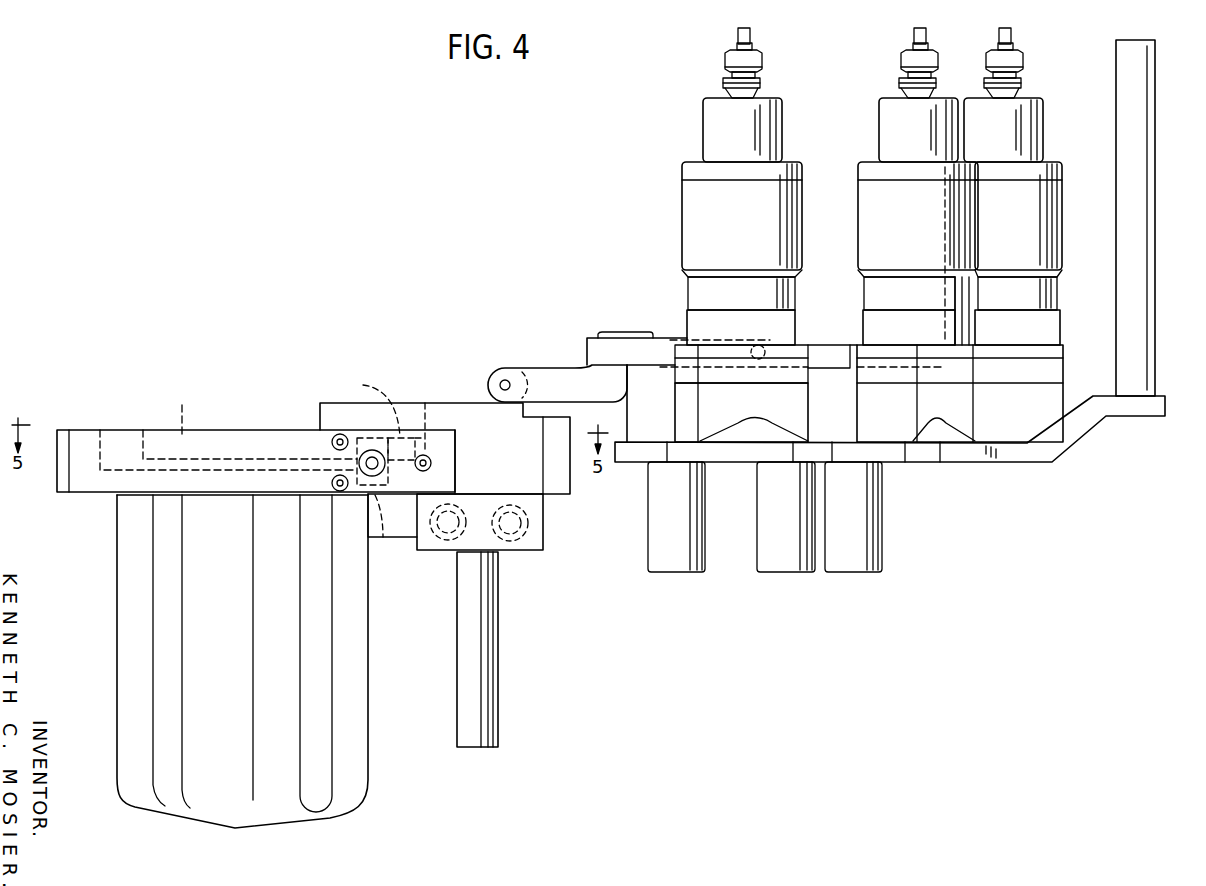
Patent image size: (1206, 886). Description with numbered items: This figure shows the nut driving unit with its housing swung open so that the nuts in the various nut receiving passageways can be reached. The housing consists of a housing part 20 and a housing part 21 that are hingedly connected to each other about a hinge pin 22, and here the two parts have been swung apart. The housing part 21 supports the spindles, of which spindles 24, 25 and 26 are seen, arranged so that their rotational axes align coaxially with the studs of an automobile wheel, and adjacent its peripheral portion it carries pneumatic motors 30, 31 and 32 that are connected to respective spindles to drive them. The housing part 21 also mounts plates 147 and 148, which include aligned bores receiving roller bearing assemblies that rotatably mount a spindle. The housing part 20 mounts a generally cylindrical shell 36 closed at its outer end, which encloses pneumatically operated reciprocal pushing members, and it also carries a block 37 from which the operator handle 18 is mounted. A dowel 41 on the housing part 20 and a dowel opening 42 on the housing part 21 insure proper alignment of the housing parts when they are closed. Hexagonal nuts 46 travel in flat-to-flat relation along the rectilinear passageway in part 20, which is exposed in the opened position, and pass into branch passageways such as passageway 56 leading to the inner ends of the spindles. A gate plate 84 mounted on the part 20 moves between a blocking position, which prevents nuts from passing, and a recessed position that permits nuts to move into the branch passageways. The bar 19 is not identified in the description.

The operator handle 18 is at (500, 722).
The upright bar 19 is at (1150, 213).
The housing part 20 is at (103, 486).
The housing part 21 is at (962, 463).
The hinge pin 22 is at (488, 383).
The spindle 24 is at (655, 552).
The spindle 25 is at (775, 566).
The spindle 26 is at (882, 564).
The pneumatic motor 30 is at (735, 219).
The pneumatic motor 31 is at (911, 219).
The pneumatic motor 32 is at (1030, 219).
The cylindrical shell 36 is at (208, 821).
The block 37 is at (510, 552).
The dowel 41 is at (258, 431).
The dowel opening 42 is at (762, 346).
The hexagonal nuts 46 is at (376, 428).
The passageway 56 is at (181, 405).
The gate plate 84 is at (389, 533).
The plate 147 is at (752, 382).
The plate 148 is at (754, 410).